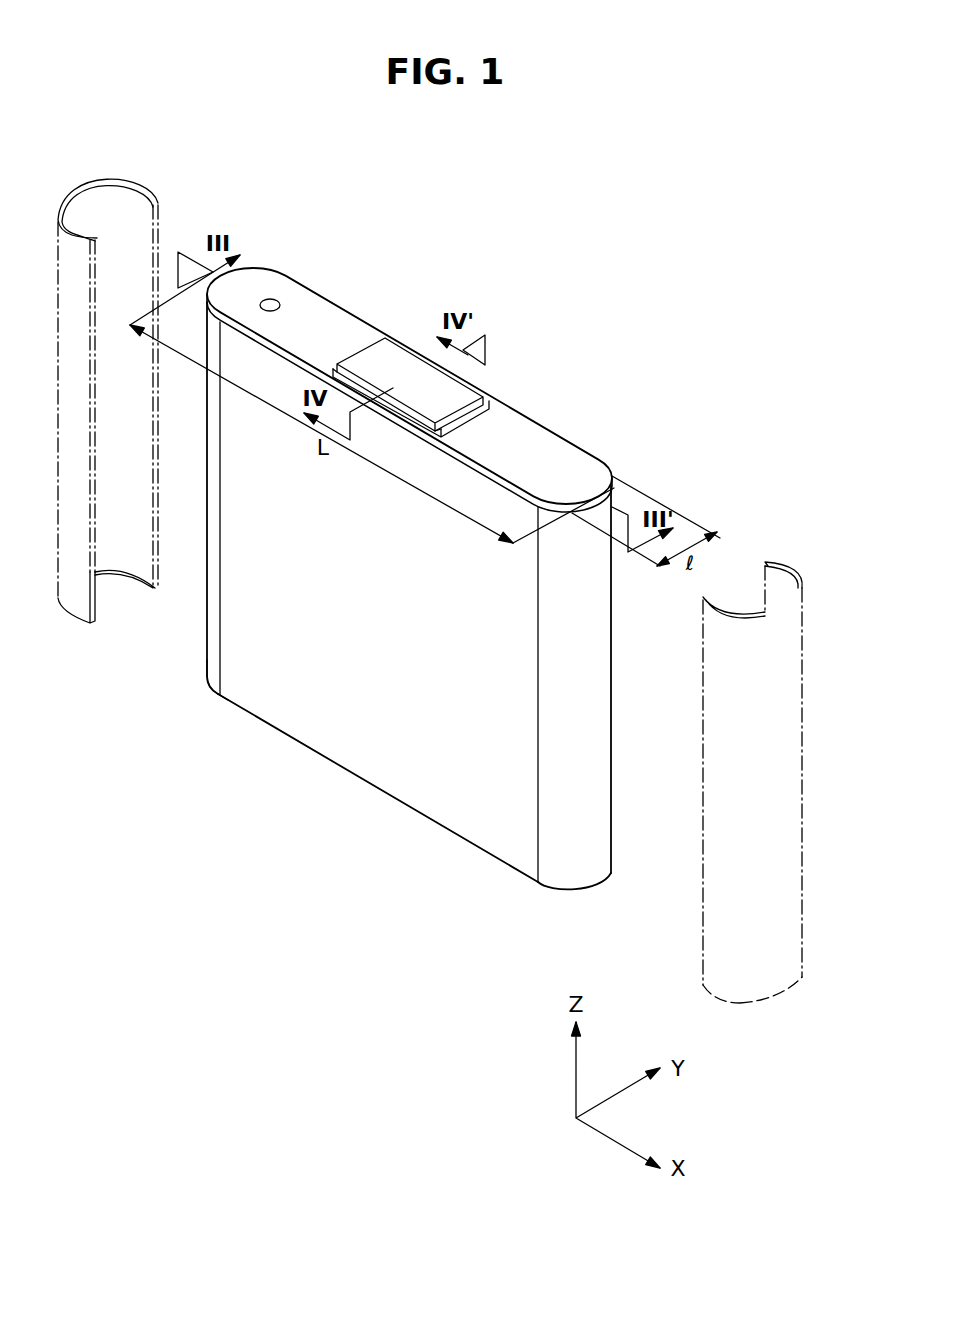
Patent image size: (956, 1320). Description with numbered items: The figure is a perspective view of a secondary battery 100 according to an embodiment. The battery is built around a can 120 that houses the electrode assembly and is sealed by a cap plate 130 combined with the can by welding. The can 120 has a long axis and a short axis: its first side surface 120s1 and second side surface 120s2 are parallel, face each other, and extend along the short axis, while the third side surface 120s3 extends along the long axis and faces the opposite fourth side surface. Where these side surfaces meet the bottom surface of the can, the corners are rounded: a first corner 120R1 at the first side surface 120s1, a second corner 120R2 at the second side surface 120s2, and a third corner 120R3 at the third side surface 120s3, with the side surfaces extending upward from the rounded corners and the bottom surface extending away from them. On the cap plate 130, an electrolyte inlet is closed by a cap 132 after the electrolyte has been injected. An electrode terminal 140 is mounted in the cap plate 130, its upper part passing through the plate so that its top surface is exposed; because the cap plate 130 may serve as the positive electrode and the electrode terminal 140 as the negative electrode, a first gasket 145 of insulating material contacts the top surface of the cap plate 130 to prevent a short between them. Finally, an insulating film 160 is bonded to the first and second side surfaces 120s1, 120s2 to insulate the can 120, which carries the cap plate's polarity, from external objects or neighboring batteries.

The secondary battery 100 is at (610, 334).
The can 120 is at (390, 635).
The first side surface 120s1 is at (205, 617).
The second side surface 120s2 is at (588, 683).
The third side surface 120s3 is at (330, 728).
The first corner 120R1 is at (206, 688).
The second corner 120R2 is at (585, 893).
The third corner 120R3 is at (455, 856).
The cap plate 130 is at (518, 430).
The cap 132 is at (277, 300).
The electrode terminal 140 is at (409, 362).
The first gasket 145 is at (371, 350).
The insulating film 160 is at (147, 193).